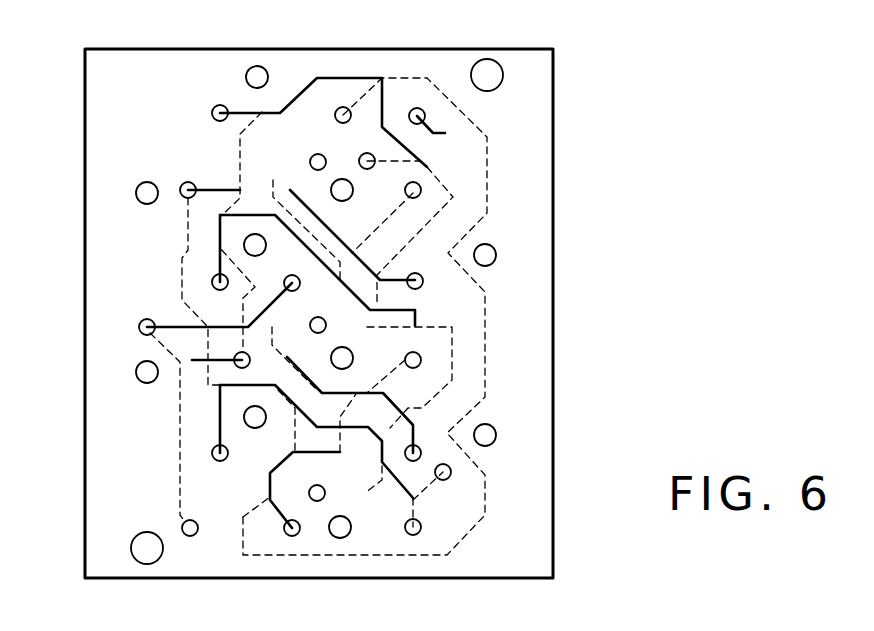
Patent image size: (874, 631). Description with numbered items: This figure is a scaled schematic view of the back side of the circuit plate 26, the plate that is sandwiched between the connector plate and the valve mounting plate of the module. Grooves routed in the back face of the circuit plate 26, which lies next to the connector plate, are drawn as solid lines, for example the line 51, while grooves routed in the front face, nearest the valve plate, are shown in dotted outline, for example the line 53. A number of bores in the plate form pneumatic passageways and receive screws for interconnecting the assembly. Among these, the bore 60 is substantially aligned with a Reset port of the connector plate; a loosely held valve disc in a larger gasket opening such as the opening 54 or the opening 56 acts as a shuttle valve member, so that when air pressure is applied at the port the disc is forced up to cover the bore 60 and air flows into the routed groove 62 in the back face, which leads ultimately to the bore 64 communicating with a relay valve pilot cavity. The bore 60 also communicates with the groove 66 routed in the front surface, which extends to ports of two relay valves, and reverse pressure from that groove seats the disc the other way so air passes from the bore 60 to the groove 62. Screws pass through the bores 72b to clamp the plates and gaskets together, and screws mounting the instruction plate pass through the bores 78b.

The circuit plate 26 is at (553, 241).
The line 51 is at (214, 188).
The line 53 is at (487, 167).
The opening 54 is at (242, 113).
The opening 56 is at (422, 230).
The bore 60 is at (413, 368).
The routed groove 62 is at (402, 307).
The bore 64 is at (212, 282).
The groove 66 is at (383, 377).
The bores 72b is at (263, 68).
The bores 78b is at (490, 74).